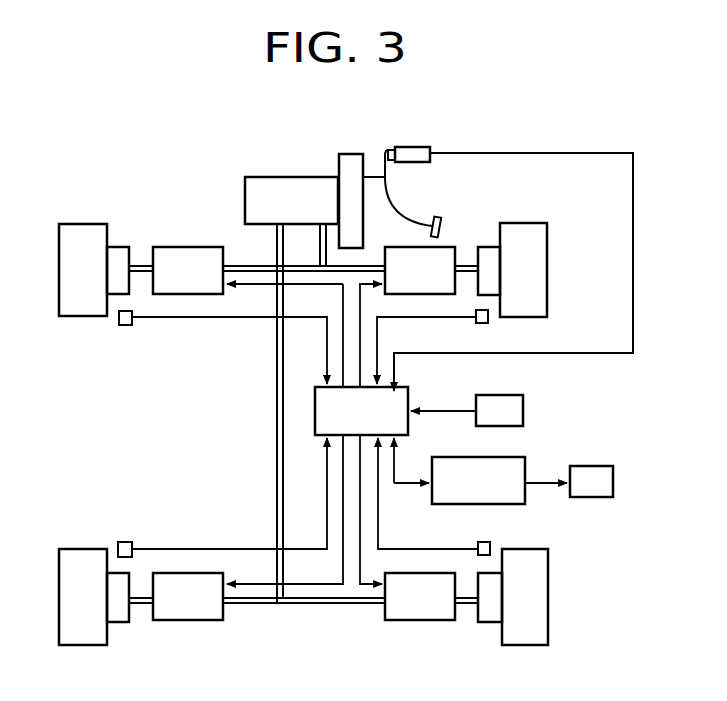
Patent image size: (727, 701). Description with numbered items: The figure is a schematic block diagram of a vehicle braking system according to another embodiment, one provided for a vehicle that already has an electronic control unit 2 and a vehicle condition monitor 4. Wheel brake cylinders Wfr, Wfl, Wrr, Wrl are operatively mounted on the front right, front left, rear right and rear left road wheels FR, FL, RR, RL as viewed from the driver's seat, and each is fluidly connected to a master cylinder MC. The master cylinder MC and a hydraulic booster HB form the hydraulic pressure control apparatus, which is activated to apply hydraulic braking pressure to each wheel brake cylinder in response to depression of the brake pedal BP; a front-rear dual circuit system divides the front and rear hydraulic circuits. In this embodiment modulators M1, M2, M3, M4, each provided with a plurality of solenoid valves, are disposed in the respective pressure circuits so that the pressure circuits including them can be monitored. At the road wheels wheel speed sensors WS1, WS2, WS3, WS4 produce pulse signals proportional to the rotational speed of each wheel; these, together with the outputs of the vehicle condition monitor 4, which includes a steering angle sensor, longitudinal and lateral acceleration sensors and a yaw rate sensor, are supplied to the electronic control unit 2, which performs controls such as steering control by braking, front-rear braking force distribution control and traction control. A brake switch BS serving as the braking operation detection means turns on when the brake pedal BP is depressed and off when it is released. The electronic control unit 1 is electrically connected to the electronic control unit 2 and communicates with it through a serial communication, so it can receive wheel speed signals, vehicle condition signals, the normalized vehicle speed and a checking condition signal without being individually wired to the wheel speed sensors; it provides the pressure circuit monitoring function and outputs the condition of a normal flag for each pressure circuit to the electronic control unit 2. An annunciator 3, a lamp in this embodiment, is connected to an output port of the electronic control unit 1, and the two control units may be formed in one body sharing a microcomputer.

The front left wheel FL is at (75, 237).
The front left wheel brake cylinder Wfl is at (118, 247).
The modulator M2 is at (188, 270).
The wheel speed sensor WS2 is at (122, 325).
The master cylinder MC is at (291, 200).
The hydraulic booster HB is at (350, 175).
The brake switch BS is at (402, 128).
The brake pedal BP is at (452, 212).
The modulator M1 is at (420, 270).
The front right wheel brake cylinder Wfr is at (520, 235).
The front right wheel FR is at (543, 253).
The wheel speed sensor WS1 is at (483, 323).
The electronic control unit 2 is at (412, 399).
The vehicle condition monitor 4 is at (497, 403).
The electronic control unit 1 is at (442, 460).
The annunciator 3 is at (590, 475).
The wheel speed sensor WS4 is at (118, 543).
The rear left wheel RL is at (77, 633).
The rear left wheel brake cylinder Wrl is at (118, 610).
The modulator M4 is at (188, 596).
The modulator M3 is at (420, 596).
The rear right wheel brake cylinder Wrr is at (492, 612).
The rear right wheel RR is at (530, 633).
The wheel speed sensor WS3 is at (490, 542).